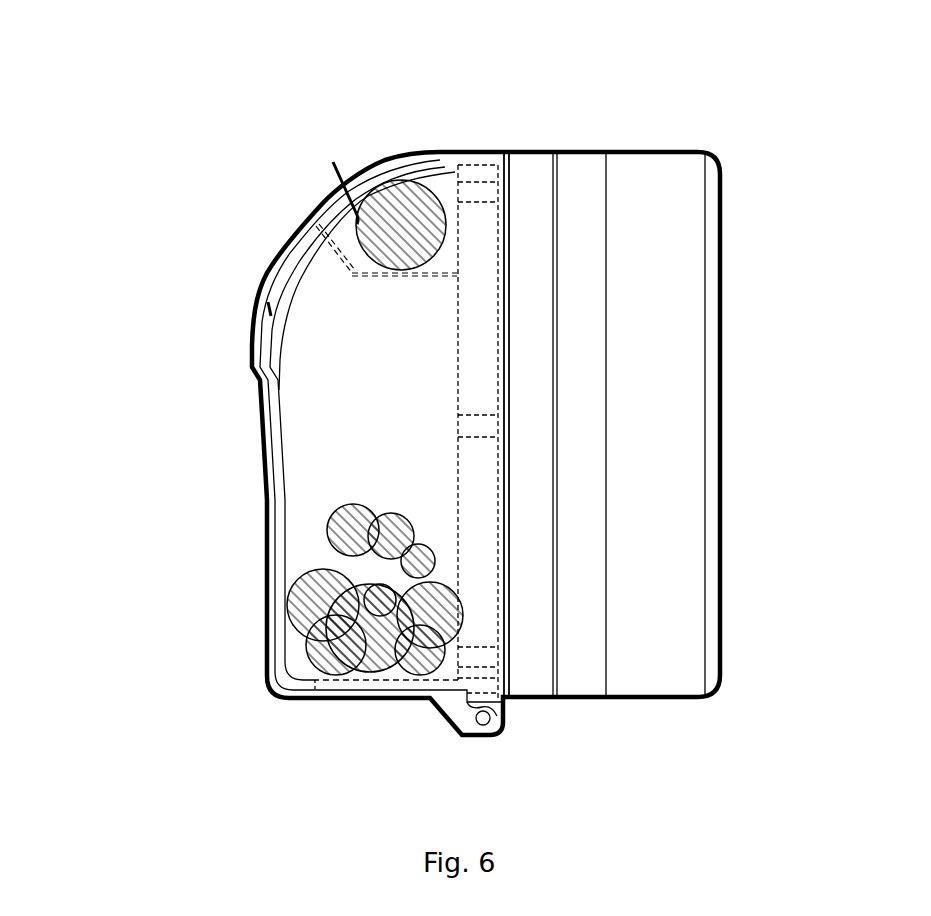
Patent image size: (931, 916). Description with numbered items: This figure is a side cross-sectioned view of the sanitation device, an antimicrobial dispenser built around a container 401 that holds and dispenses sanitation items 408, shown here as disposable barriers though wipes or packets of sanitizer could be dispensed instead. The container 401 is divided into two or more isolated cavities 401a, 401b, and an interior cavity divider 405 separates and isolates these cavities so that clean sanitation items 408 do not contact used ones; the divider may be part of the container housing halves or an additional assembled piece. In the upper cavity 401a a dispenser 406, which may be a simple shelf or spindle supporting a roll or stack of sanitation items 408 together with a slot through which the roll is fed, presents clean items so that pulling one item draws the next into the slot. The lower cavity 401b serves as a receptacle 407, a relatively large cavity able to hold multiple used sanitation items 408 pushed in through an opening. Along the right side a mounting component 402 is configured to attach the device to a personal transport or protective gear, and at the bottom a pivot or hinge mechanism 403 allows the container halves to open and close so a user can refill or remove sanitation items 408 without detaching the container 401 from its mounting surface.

The container 401 is at (263, 565).
The cavity 401a is at (449, 176).
The cavity 401b is at (308, 448).
The mounting component 402 is at (670, 354).
The pivot or hinge mechanism 403 is at (465, 724).
The interior cavity divider 405 is at (346, 282).
The dispenser 406 is at (320, 199).
The receptacle 407 is at (255, 305).
The sanitation item 408 is at (410, 190).